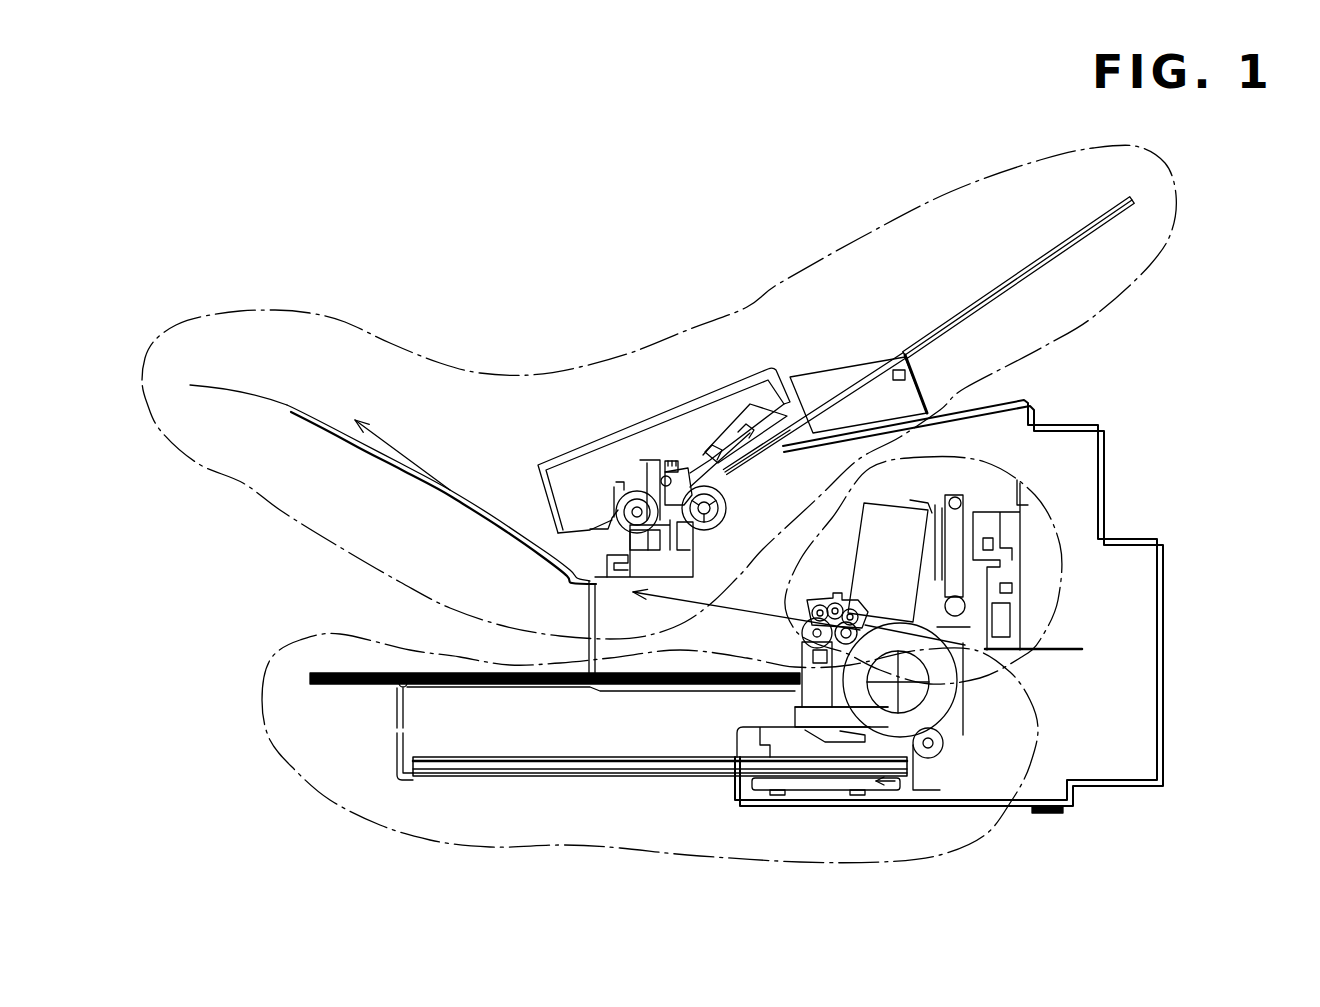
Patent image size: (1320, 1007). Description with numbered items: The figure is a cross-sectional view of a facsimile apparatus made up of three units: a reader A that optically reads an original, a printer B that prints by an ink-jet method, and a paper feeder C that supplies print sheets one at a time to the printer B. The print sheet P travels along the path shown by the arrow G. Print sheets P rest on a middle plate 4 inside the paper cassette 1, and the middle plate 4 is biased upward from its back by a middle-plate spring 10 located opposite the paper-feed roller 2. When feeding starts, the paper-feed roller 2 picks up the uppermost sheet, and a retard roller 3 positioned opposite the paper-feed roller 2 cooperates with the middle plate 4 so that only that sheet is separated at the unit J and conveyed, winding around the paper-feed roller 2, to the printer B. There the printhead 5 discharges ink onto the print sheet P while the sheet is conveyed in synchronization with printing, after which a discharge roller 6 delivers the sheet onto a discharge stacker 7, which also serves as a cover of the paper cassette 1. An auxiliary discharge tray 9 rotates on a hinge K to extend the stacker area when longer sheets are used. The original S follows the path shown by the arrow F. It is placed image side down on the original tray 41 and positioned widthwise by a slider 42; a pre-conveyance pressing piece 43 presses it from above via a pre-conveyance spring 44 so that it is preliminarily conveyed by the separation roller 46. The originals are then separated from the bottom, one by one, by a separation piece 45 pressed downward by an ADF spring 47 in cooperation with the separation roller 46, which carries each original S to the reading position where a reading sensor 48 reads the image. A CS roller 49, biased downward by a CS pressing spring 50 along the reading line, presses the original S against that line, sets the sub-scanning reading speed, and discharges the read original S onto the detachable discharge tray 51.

The paper cassette 1 is at (395, 763).
The paper-feed roller 2 is at (935, 700).
The retard roller 3 is at (937, 750).
The middle plate 4 is at (828, 787).
The printhead 5 is at (887, 517).
The discharge roller 6 is at (803, 640).
The discharge stacker 7 is at (697, 690).
The auxiliary discharge tray 9 is at (499, 689).
The middle-plate spring 10 is at (887, 787).
The original tray 41 is at (1027, 280).
The slider 42 is at (833, 373).
The pre-conveyance pressing piece 43 is at (743, 460).
The pre-conveyance spring 44 is at (688, 497).
The separation piece 45 is at (682, 483).
The separation roller 46 is at (727, 510).
The ADF spring 47 is at (657, 493).
The reading sensor 48 is at (613, 548).
The CS roller 49 is at (615, 505).
The CS pressing spring 50 is at (620, 492).
The discharge tray 51 is at (448, 503).
The reader A is at (443, 348).
The printer B is at (1060, 510).
The paper feeder C is at (470, 858).
The arrow F is at (390, 440).
The arrow G is at (734, 606).
The unit J is at (795, 715).
The hinge K is at (397, 688).
The print sheet P is at (547, 757).
The original S is at (1003, 277).